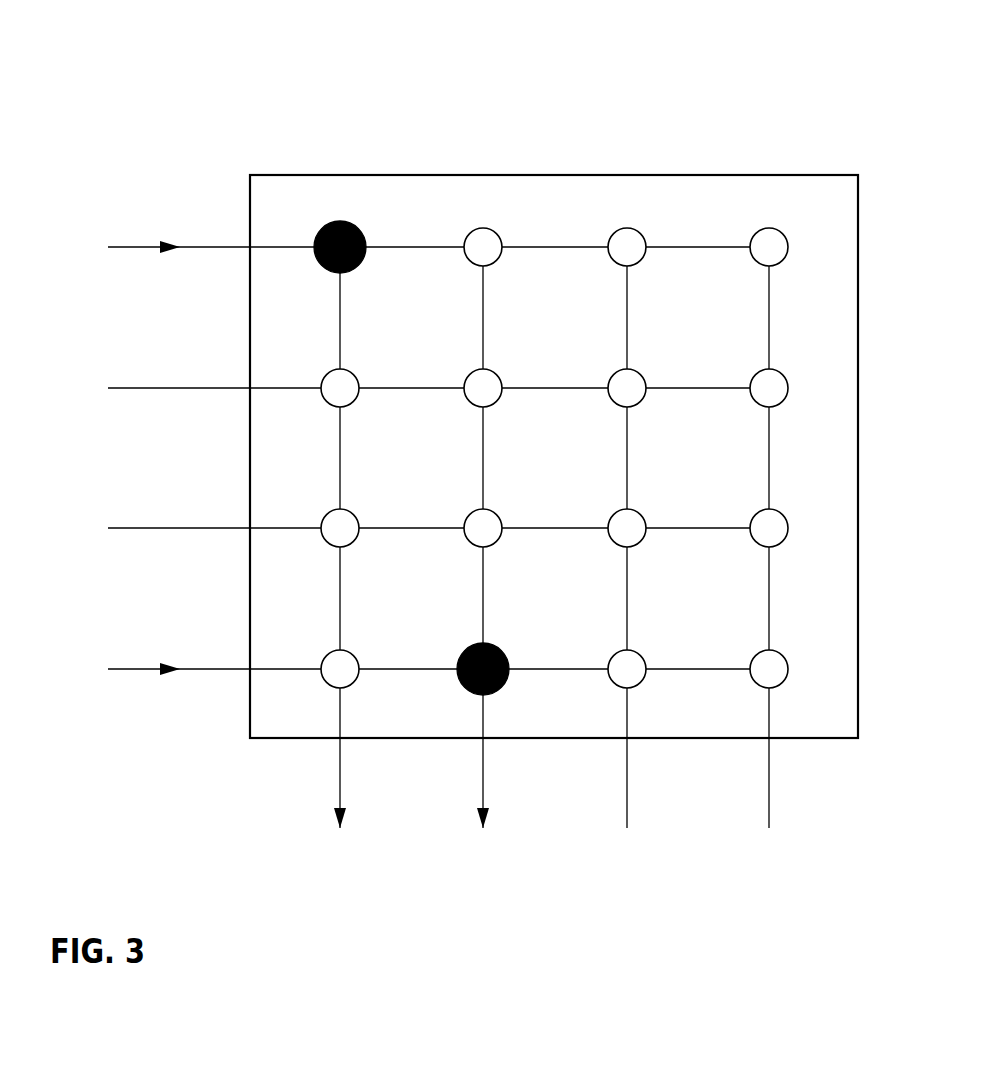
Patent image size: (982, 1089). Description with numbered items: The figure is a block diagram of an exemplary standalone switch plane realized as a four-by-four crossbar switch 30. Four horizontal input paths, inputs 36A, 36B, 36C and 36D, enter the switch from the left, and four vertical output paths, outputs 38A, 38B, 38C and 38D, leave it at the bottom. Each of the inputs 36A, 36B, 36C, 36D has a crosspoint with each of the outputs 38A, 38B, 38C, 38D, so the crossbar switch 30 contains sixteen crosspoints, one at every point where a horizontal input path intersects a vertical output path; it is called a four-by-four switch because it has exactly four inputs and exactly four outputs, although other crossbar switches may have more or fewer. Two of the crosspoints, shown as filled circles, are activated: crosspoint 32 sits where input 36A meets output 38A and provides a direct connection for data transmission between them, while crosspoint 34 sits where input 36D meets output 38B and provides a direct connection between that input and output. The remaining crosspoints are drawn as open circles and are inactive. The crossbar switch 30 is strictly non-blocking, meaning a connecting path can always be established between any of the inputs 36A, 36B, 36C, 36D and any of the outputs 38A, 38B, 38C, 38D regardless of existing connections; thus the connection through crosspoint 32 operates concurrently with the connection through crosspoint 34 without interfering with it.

The crossbar switch 30 is at (134, 139).
The crosspoint 32 is at (366, 261).
The crosspoint 34 is at (509, 658).
The input 36A is at (395, 250).
The input 36B is at (395, 389).
The input 36C is at (395, 529).
The input 36D is at (395, 670).
The output 38A is at (340, 570).
The output 38B is at (483, 570).
The output 38C is at (627, 570).
The output 38D is at (769, 570).